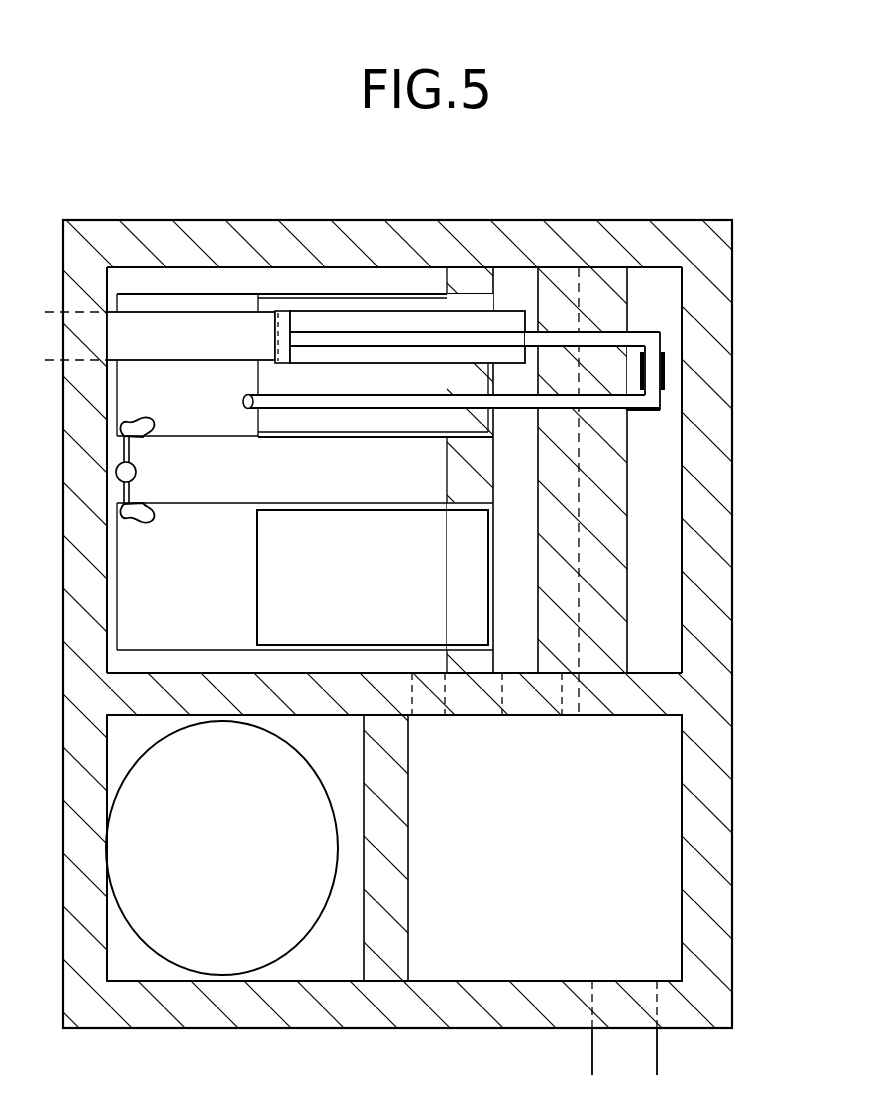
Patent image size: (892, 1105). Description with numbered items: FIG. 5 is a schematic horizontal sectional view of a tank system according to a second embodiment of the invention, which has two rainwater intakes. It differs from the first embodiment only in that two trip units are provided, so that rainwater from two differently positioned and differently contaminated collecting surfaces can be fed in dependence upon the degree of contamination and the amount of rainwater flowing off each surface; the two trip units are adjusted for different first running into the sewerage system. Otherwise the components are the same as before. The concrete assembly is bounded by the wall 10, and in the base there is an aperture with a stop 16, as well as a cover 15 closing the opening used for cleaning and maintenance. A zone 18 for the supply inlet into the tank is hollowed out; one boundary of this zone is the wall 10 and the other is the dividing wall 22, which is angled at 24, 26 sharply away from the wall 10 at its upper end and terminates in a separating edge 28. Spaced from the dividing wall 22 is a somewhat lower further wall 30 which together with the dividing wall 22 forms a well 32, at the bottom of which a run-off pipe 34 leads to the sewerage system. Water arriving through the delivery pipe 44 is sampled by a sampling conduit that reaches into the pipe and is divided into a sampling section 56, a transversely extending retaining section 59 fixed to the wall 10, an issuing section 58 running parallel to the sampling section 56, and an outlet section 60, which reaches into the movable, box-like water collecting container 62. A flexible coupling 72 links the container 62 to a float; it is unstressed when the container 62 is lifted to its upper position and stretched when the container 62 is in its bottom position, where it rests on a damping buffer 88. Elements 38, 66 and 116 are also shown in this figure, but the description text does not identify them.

The wall 10 is at (722, 490).
The cover 15 is at (120, 900).
The stop 16 is at (135, 478).
The zone 18 is at (672, 600).
The dividing wall 22 is at (667, 307).
The angled portion of dividing wall 24 is at (617, 277).
The angled portion of dividing wall 26 is at (560, 275).
The separating edge 28 is at (535, 272).
The further wall 30 is at (490, 493).
The well 32 is at (528, 599).
The run-off pipe 34 is at (550, 717).
The push rod 38 is at (178, 362).
The delivery pipe 44 is at (318, 300).
The sampling section 56 is at (372, 330).
The issuing section 58 is at (350, 438).
The retaining section 59 is at (633, 373).
The outlet section 60 is at (665, 398).
The water collecting container 62 is at (220, 437).
The retaining bar 66 is at (131, 447).
The flexible coupling 72 is at (133, 420).
The damping buffer 88 is at (425, 717).
The electrical leads 116 is at (657, 1052).